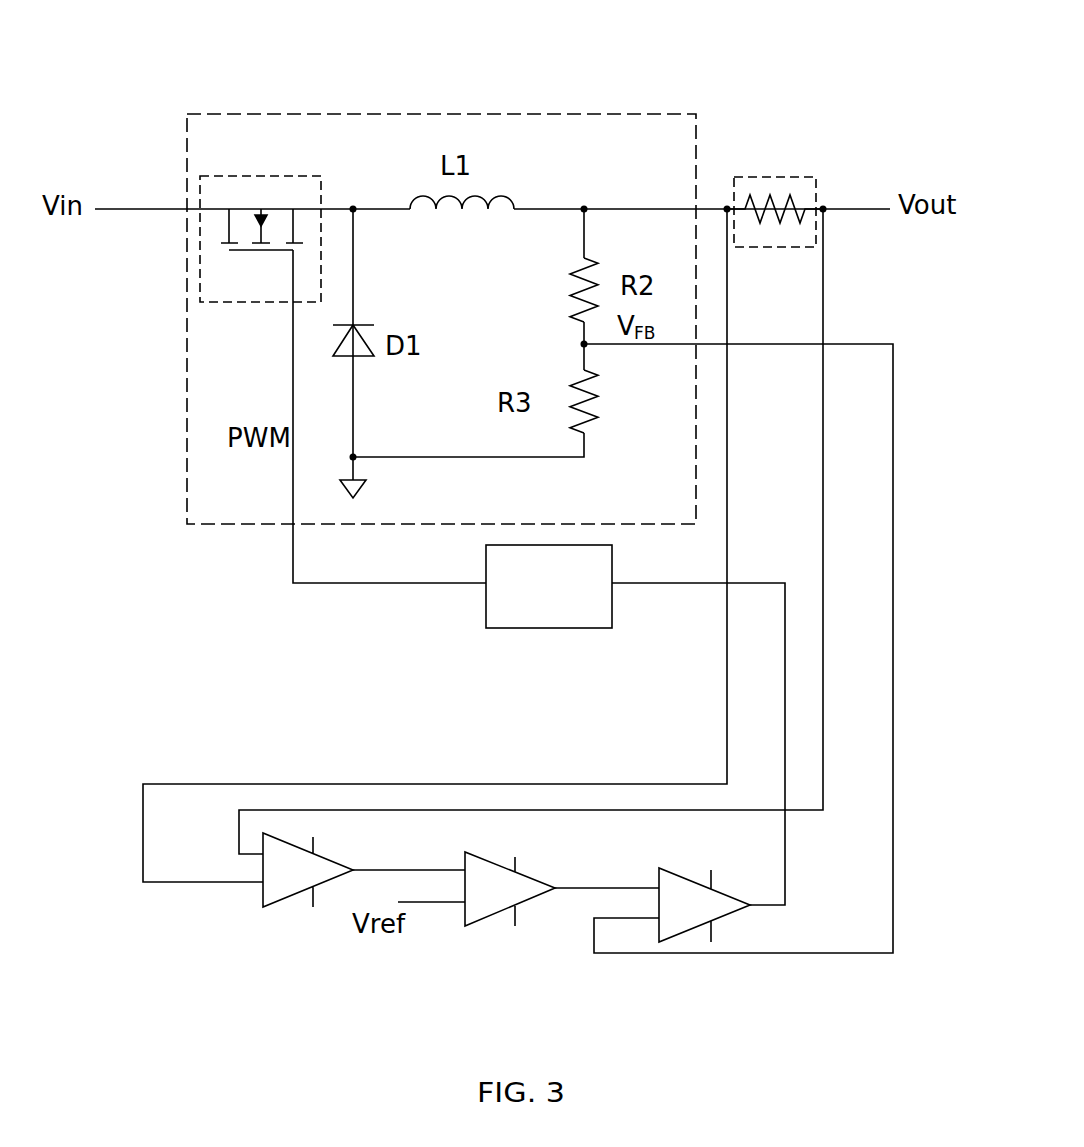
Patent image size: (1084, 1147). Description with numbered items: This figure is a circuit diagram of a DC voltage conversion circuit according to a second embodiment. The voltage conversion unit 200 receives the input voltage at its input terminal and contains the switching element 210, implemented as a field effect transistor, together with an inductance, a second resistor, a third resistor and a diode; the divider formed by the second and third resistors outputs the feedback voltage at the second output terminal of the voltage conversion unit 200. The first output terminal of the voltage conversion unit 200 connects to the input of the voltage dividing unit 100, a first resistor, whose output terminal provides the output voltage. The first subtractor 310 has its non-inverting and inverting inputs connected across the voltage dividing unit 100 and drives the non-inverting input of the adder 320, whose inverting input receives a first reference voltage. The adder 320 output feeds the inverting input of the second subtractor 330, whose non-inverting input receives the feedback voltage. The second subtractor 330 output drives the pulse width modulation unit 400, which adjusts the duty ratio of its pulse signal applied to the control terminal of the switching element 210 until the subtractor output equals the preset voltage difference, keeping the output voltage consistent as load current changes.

The voltage dividing unit 100 is at (775, 177).
The voltage conversion unit 200 is at (580, 114).
The switching element 210 is at (230, 176).
The first subtractor 310 is at (285, 900).
The adder 320 is at (485, 918).
The second subtractor 330 is at (680, 935).
The pulse width modulation unit 400 is at (612, 558).